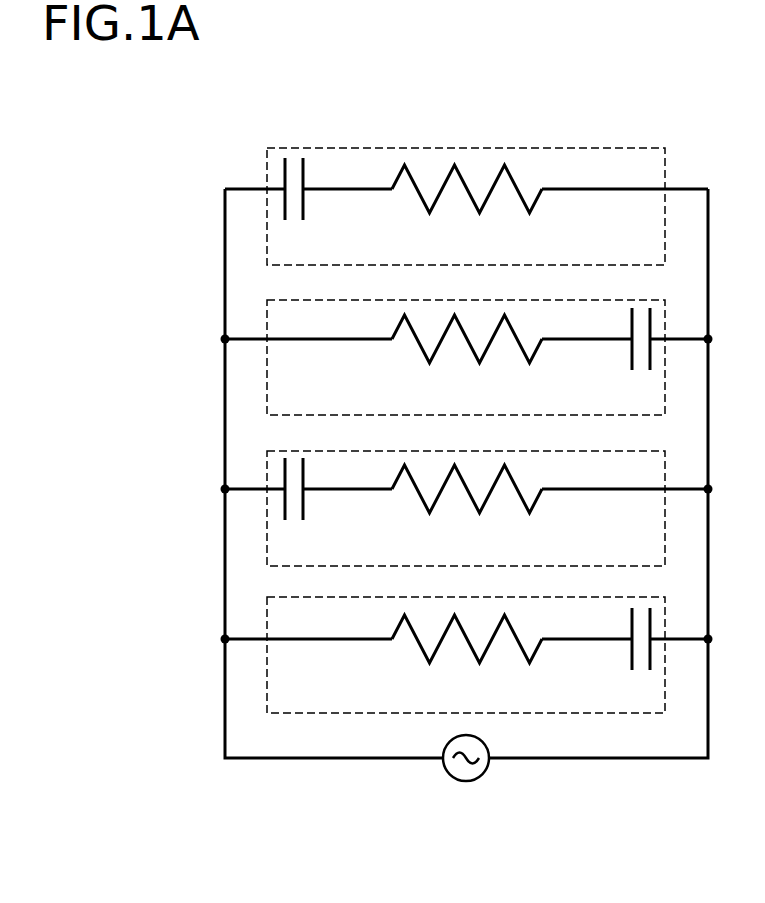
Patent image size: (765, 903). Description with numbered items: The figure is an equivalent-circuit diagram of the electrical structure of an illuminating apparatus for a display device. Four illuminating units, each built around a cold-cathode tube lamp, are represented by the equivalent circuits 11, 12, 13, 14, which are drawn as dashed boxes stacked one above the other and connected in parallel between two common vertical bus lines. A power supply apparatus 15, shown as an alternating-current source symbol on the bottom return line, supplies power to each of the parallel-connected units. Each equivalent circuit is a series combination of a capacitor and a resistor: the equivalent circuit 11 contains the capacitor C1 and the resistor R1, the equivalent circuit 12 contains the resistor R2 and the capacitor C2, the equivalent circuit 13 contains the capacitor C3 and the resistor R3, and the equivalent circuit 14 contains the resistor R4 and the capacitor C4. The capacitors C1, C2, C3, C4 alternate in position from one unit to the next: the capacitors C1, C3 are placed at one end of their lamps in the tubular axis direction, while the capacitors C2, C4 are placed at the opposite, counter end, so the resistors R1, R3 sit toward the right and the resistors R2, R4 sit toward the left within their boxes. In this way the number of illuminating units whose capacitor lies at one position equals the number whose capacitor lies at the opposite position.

The equivalent circuit 11 is at (665, 170).
The equivalent circuit 12 is at (667, 321).
The equivalent circuit 13 is at (665, 475).
The equivalent circuit 14 is at (665, 620).
The power supply apparatus 15 is at (483, 774).
The capacitor C1 is at (294, 222).
The capacitor C2 is at (641, 372).
The capacitor C3 is at (294, 522).
The capacitor C4 is at (641, 672).
The resistor R1 is at (467, 216).
The resistor R2 is at (467, 366).
The resistor R3 is at (467, 516).
The resistor R4 is at (467, 666).